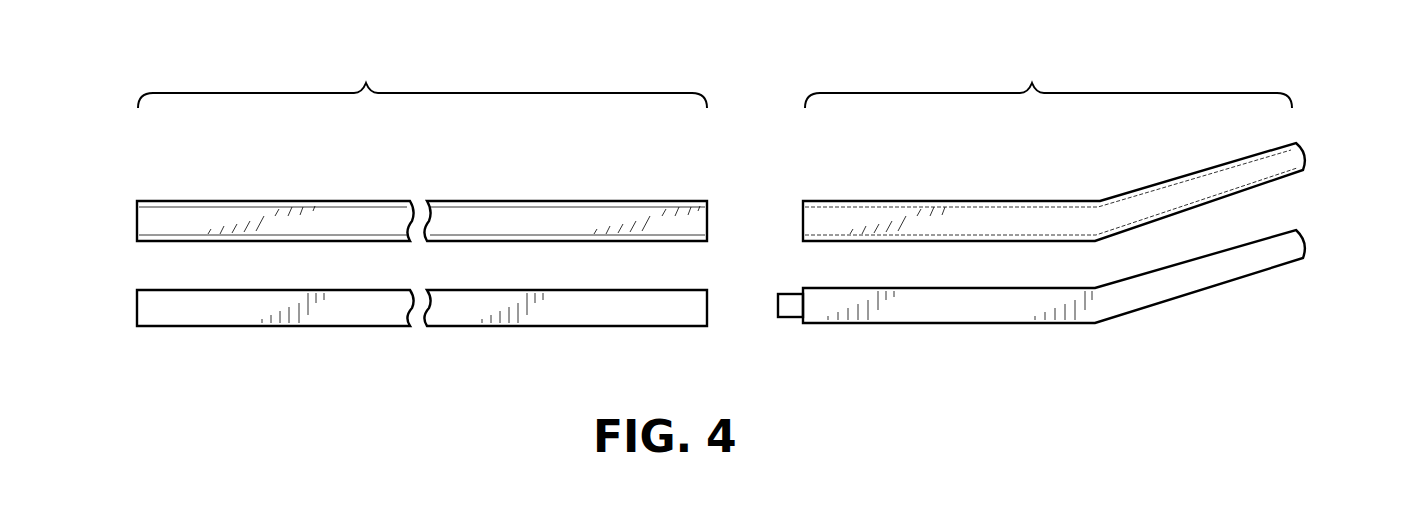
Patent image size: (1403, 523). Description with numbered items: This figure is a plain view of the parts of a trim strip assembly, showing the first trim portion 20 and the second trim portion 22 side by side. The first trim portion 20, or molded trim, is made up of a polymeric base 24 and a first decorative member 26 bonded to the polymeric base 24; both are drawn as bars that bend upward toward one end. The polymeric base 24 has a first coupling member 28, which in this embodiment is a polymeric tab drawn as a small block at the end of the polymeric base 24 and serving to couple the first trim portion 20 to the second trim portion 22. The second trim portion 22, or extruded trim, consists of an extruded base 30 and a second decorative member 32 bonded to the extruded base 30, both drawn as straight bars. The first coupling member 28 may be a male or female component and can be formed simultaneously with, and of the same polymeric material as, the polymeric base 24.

The first trim portion 20 is at (1048, 83).
The second trim portion 22 is at (422, 83).
The polymeric base 24 is at (935, 308).
The first decorative member 26 is at (1290, 160).
The first coupling member 28 is at (791, 310).
The extruded base 30 is at (157, 307).
The second decorative member 32 is at (148, 213).